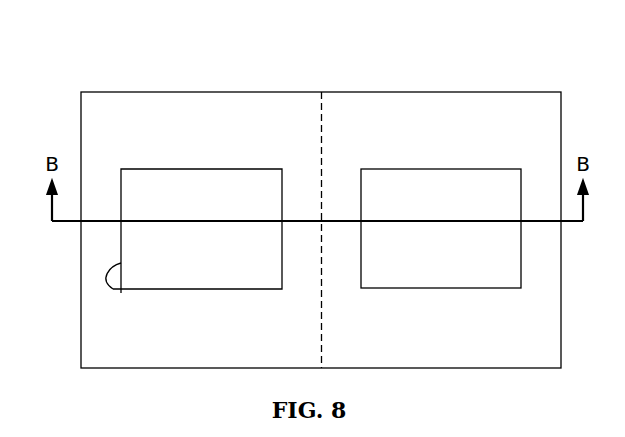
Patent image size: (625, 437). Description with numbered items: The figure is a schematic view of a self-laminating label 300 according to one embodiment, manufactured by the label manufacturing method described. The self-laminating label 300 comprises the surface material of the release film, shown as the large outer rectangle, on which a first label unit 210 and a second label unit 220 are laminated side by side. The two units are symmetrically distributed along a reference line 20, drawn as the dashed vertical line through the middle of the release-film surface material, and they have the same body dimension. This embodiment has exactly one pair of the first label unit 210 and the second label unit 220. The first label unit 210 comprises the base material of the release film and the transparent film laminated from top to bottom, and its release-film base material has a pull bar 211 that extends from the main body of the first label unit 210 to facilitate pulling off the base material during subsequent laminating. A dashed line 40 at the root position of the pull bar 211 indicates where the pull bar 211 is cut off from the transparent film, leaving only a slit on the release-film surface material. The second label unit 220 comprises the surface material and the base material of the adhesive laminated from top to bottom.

The self-laminating label 300 is at (516, 44).
The reference line 20 is at (312, 142).
The first label unit 210 is at (163, 157).
The pull bar 211 is at (92, 280).
The dashed line 40 is at (134, 273).
The second label unit 220 is at (425, 158).